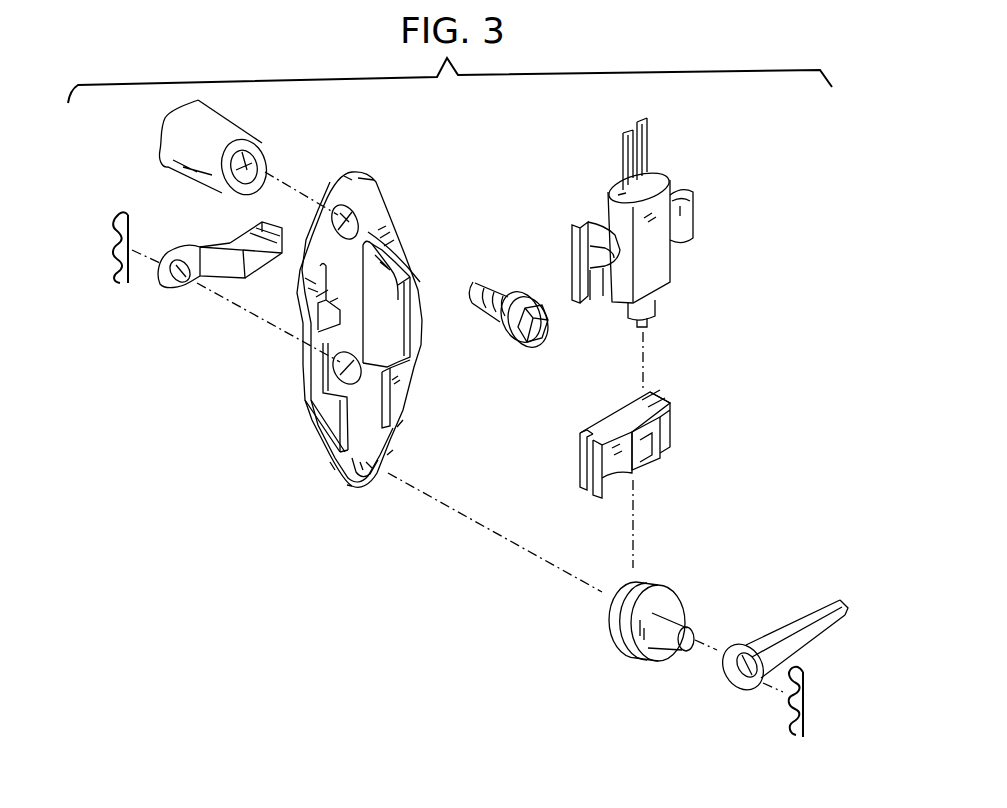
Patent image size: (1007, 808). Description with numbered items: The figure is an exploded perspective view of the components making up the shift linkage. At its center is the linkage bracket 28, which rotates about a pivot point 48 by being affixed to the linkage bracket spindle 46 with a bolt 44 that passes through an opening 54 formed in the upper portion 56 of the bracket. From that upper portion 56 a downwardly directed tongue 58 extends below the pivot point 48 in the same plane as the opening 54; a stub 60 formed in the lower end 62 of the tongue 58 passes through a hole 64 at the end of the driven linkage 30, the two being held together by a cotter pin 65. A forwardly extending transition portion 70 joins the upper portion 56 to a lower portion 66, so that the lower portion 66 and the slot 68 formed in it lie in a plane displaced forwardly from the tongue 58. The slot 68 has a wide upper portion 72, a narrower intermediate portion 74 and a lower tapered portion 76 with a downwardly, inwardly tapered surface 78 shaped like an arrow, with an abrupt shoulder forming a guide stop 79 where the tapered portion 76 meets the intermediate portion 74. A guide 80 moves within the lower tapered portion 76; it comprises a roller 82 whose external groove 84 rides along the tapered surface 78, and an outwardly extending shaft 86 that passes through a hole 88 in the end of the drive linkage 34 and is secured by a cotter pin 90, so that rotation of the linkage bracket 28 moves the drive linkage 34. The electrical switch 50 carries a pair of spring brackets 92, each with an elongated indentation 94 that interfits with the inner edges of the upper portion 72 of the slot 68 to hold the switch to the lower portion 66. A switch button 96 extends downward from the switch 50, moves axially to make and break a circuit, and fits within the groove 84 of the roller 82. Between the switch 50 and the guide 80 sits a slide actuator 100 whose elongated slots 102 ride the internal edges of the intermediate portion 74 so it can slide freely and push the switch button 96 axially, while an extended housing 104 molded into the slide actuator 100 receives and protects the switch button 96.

The linkage bracket 28 is at (300, 350).
The driven linkage 30 is at (210, 269).
The drive linkage 34 is at (781, 634).
The bolt 44 is at (495, 287).
The linkage bracket spindle 46 is at (230, 133).
The pivot point 48 is at (353, 205).
The electrical switch 50 is at (636, 232).
The opening 54 is at (365, 210).
The upper portion 56 is at (378, 228).
The tongue 58 is at (337, 352).
The stub 60 is at (327, 383).
The lower end 62 is at (408, 370).
The hole 64 is at (175, 288).
The cotter pin 65 is at (120, 257).
The lower portion 66 is at (335, 432).
The slot 68 is at (387, 317).
The transition portion 70 is at (300, 300).
The upper portion of slot 72 is at (412, 328).
The intermediate portion 74 is at (387, 407).
The lower tapered portion 76 is at (365, 463).
The inwardly tapered surface 78 is at (347, 485).
The guide stop 79 is at (335, 470).
The guide 80 is at (642, 615).
The roller 82 is at (677, 603).
The groove 84 is at (613, 618).
The shaft 86 is at (673, 627).
The hole 88 is at (747, 667).
The cotter pin 90 is at (800, 677).
The spring brackets 92 is at (693, 213).
The elongated indentation 94 is at (572, 270).
The switch button 96 is at (647, 323).
The slide actuator 100 is at (646, 432).
The elongated slots 102 is at (658, 400).
The extended housing 104 is at (657, 465).